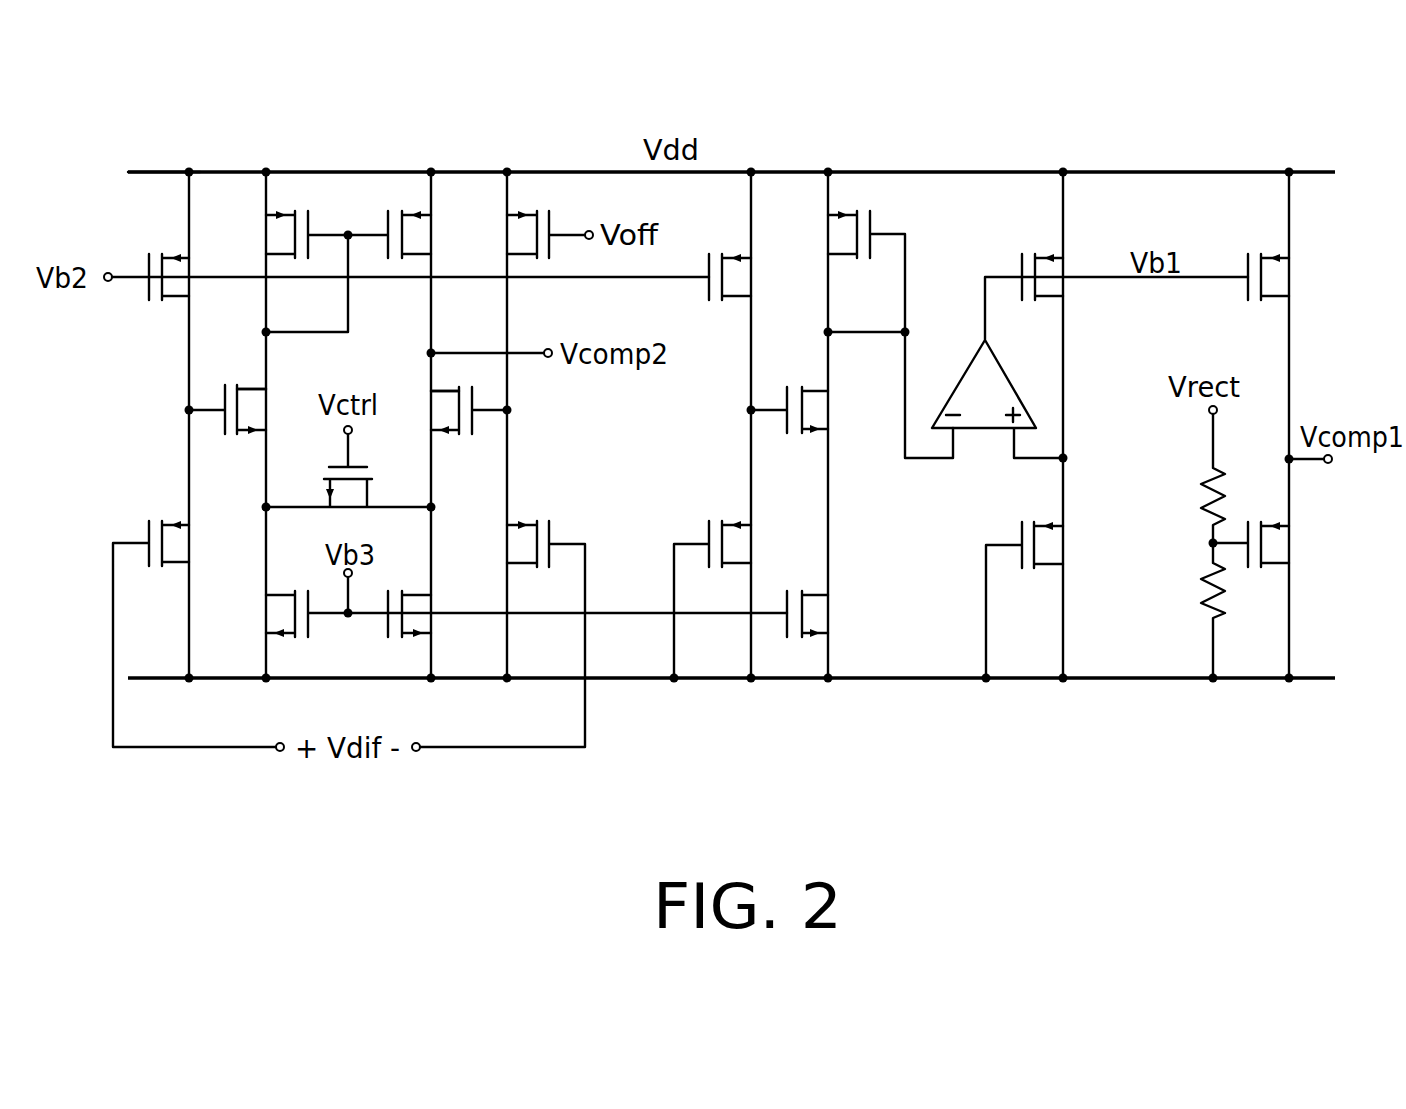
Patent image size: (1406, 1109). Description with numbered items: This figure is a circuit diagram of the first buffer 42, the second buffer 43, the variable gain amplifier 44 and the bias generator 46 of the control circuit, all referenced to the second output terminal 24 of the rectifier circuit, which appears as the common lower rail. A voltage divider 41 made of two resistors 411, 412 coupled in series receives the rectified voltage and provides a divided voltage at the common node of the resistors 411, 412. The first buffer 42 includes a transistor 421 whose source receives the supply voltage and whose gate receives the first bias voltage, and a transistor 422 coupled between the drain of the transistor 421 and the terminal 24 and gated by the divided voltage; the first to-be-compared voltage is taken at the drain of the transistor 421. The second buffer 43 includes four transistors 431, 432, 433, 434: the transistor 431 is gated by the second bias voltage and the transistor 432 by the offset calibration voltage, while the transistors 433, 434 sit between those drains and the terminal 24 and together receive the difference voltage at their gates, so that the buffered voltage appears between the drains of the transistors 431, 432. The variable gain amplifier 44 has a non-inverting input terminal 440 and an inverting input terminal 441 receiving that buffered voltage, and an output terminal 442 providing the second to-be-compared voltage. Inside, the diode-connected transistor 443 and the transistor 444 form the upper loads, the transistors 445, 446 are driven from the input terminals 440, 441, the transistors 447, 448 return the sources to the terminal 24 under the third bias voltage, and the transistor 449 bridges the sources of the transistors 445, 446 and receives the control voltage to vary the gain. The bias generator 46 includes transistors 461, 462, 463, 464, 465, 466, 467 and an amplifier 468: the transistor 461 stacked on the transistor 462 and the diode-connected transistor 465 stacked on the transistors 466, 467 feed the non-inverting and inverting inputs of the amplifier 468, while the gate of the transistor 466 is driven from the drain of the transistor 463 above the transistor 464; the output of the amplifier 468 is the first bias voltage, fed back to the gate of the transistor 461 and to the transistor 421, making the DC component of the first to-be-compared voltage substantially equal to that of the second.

The second output terminal 24 is at (897, 682).
The voltage divider 41 is at (1171, 546).
The resistor 411 is at (1207, 480).
The resistor 412 is at (1190, 561).
The first buffer 42 is at (1299, 155).
The transistor 421 is at (1280, 297).
The transistor 422 is at (1280, 562).
The second buffer 43 is at (194, 150).
The transistor 431 is at (178, 297).
The transistor 432 is at (521, 256).
The transistor 433 is at (178, 568).
The transistor 434 is at (520, 567).
The variable gain amplifier 44 is at (361, 147).
The non-inverting input terminal 440 is at (210, 434).
The inverting input terminal 441 is at (486, 435).
The output terminal 442 is at (524, 357).
The transistor 443 is at (282, 255).
The transistor 444 is at (420, 256).
The transistor 445 is at (252, 386).
The transistor 446 is at (443, 385).
The transistor 447 is at (275, 600).
The transistor 448 is at (420, 597).
The transistor 449 is at (372, 492).
The bias generator 46 is at (899, 155).
The transistor 461 is at (1052, 297).
The transistor 462 is at (1052, 560).
The transistor 463 is at (740, 298).
The transistor 464 is at (742, 560).
The transistor 465 is at (843, 251).
The transistor 466 is at (813, 393).
The transistor 467 is at (814, 600).
The amplifier 468 is at (963, 378).